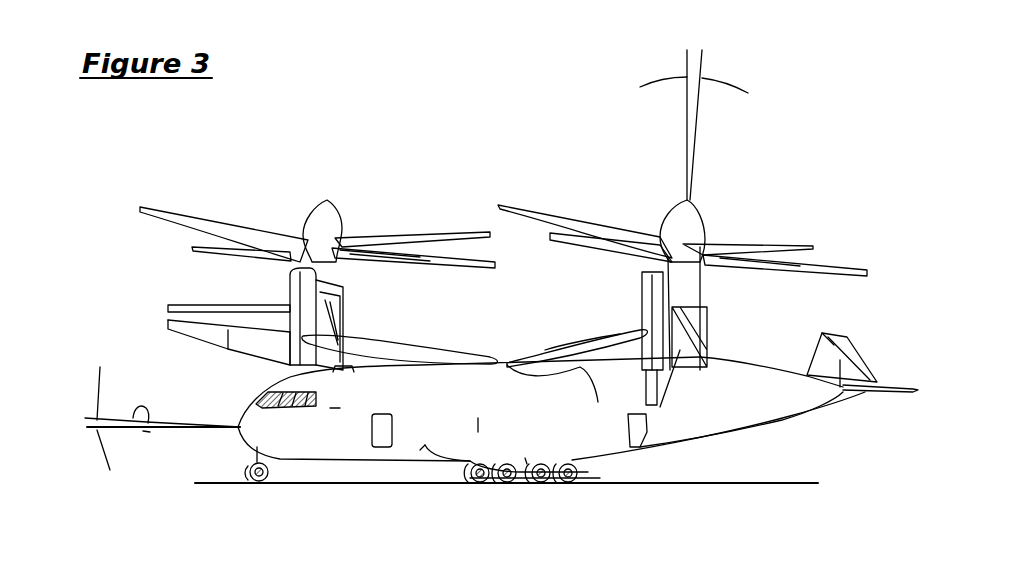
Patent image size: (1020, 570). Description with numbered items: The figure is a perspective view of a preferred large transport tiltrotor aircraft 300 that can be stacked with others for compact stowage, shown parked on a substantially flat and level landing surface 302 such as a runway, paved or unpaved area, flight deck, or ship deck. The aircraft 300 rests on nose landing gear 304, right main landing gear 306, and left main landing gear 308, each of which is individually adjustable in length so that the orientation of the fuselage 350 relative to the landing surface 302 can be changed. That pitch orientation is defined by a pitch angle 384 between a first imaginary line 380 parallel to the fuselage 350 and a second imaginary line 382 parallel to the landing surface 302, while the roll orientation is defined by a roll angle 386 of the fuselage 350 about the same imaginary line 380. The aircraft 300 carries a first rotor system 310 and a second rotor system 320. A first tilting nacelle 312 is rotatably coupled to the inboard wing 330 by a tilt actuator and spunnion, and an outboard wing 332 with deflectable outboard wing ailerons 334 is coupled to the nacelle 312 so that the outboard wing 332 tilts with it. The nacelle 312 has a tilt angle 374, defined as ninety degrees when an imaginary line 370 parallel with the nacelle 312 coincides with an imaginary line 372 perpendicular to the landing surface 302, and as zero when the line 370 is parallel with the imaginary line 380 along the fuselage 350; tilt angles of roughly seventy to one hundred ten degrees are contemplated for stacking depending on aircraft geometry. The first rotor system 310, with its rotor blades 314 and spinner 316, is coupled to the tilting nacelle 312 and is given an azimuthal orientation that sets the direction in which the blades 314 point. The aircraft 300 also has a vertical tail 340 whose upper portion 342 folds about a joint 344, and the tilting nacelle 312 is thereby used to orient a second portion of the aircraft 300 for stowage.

The tiltrotor aircraft 300 is at (340, 112).
The landing surface 302 is at (762, 482).
The nose landing gear 304 is at (248, 477).
The right main landing gear 306 is at (480, 479).
The left main landing gear 308 is at (577, 478).
The first rotor system 310 is at (317, 196).
The first tilting nacelle 312 is at (290, 295).
The rotor blades 314 is at (360, 242).
The spinner 316 is at (336, 200).
The second rotor system 320 is at (682, 217).
The inboard wing 330 is at (405, 342).
The outboard wing 332 is at (168, 320).
The outboard wing ailerons 334 is at (240, 350).
The vertical tail 340 is at (837, 313).
The upper portion 342 is at (858, 353).
The joint 344 is at (835, 335).
The fuselage 350 is at (782, 423).
The imaginary line parallel with the tilting nacelle 370 is at (700, 70).
The imaginary line perpendicular to the landing surface 372 is at (688, 67).
The tilt angle 374 is at (660, 80).
The imaginary line parallel to the fuselage 380 is at (112, 415).
The imaginary line parallel to the landing surface 382 is at (110, 430).
The pitch angle 384 is at (100, 455).
The roll angle 386 is at (147, 434).